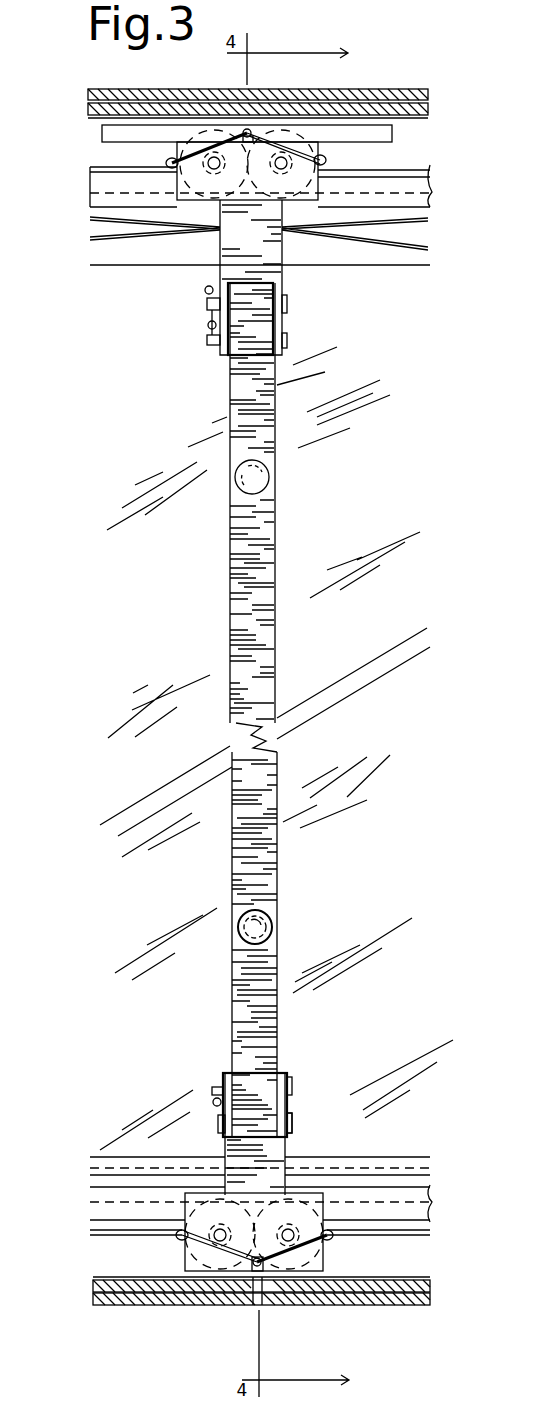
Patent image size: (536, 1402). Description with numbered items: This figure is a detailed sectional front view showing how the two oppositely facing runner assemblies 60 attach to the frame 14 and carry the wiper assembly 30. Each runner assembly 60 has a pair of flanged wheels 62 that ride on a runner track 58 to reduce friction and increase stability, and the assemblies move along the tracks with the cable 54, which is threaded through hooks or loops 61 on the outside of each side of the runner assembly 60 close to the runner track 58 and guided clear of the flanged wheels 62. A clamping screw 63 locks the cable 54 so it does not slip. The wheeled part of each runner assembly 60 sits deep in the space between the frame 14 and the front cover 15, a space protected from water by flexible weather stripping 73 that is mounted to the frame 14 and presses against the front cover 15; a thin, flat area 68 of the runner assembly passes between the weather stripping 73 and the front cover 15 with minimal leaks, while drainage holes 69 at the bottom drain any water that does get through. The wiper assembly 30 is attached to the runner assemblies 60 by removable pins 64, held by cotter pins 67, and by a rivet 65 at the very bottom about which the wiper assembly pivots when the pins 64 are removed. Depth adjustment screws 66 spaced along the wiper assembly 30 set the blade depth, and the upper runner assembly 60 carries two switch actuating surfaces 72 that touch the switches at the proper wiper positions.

The frame 14 is at (430, 92).
The front cover 15 is at (430, 108).
The wiper assembly 30 is at (276, 548).
The cable 54 is at (90, 237).
The runner track 58 is at (430, 193).
The runner assembly 60 is at (282, 283).
The hooks or loops 61 is at (167, 161).
The flanged wheels 62 is at (200, 1262).
The clamping screw 63 is at (246, 128).
The removable pins 64 is at (288, 336).
The rivet 65 is at (292, 1120).
The depth adjustment screws 66 is at (270, 477).
The cotter pins 67 is at (207, 292).
The flat area 68 is at (234, 265).
The drainage holes 69 is at (253, 1307).
The switch actuating surfaces 72 is at (102, 133).
The weather stripping 73 is at (430, 1165).